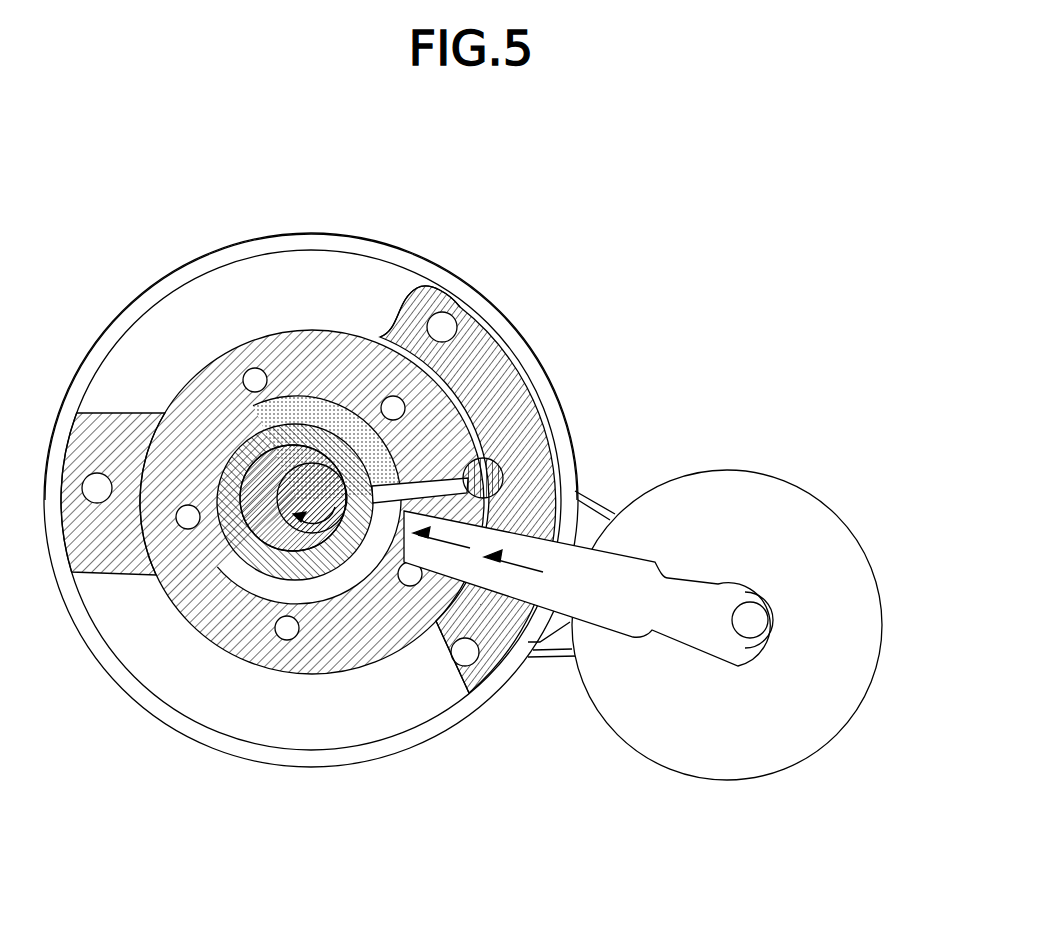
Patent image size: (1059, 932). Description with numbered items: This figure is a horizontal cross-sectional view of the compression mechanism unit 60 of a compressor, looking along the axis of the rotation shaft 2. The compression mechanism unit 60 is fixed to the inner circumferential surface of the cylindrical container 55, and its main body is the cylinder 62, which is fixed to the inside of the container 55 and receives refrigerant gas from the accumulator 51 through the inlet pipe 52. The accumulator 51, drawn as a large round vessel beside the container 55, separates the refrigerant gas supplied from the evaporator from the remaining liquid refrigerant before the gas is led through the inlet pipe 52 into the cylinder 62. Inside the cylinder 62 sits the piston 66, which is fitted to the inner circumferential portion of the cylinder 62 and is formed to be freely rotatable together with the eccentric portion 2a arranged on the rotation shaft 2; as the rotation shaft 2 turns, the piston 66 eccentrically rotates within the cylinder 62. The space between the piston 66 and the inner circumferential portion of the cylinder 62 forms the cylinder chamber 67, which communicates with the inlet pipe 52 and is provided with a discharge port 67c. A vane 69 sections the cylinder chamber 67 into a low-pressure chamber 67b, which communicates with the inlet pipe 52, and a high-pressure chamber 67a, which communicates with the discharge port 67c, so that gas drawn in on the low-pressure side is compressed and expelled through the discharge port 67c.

The rotation shaft 2 is at (313, 487).
The eccentric portion 2a is at (233, 563).
The accumulator 51 is at (822, 752).
The inlet pipe 52 is at (687, 582).
The container 55 is at (491, 708).
The compression mechanism unit 60 is at (330, 298).
The cylinder 62 is at (187, 402).
The piston 66 is at (247, 447).
The cylinder chamber 67 is at (373, 553).
The high-pressure chamber 67a is at (340, 423).
The low-pressure chamber 67b is at (355, 582).
The discharge port 67c is at (435, 480).
The vane 69 is at (485, 458).